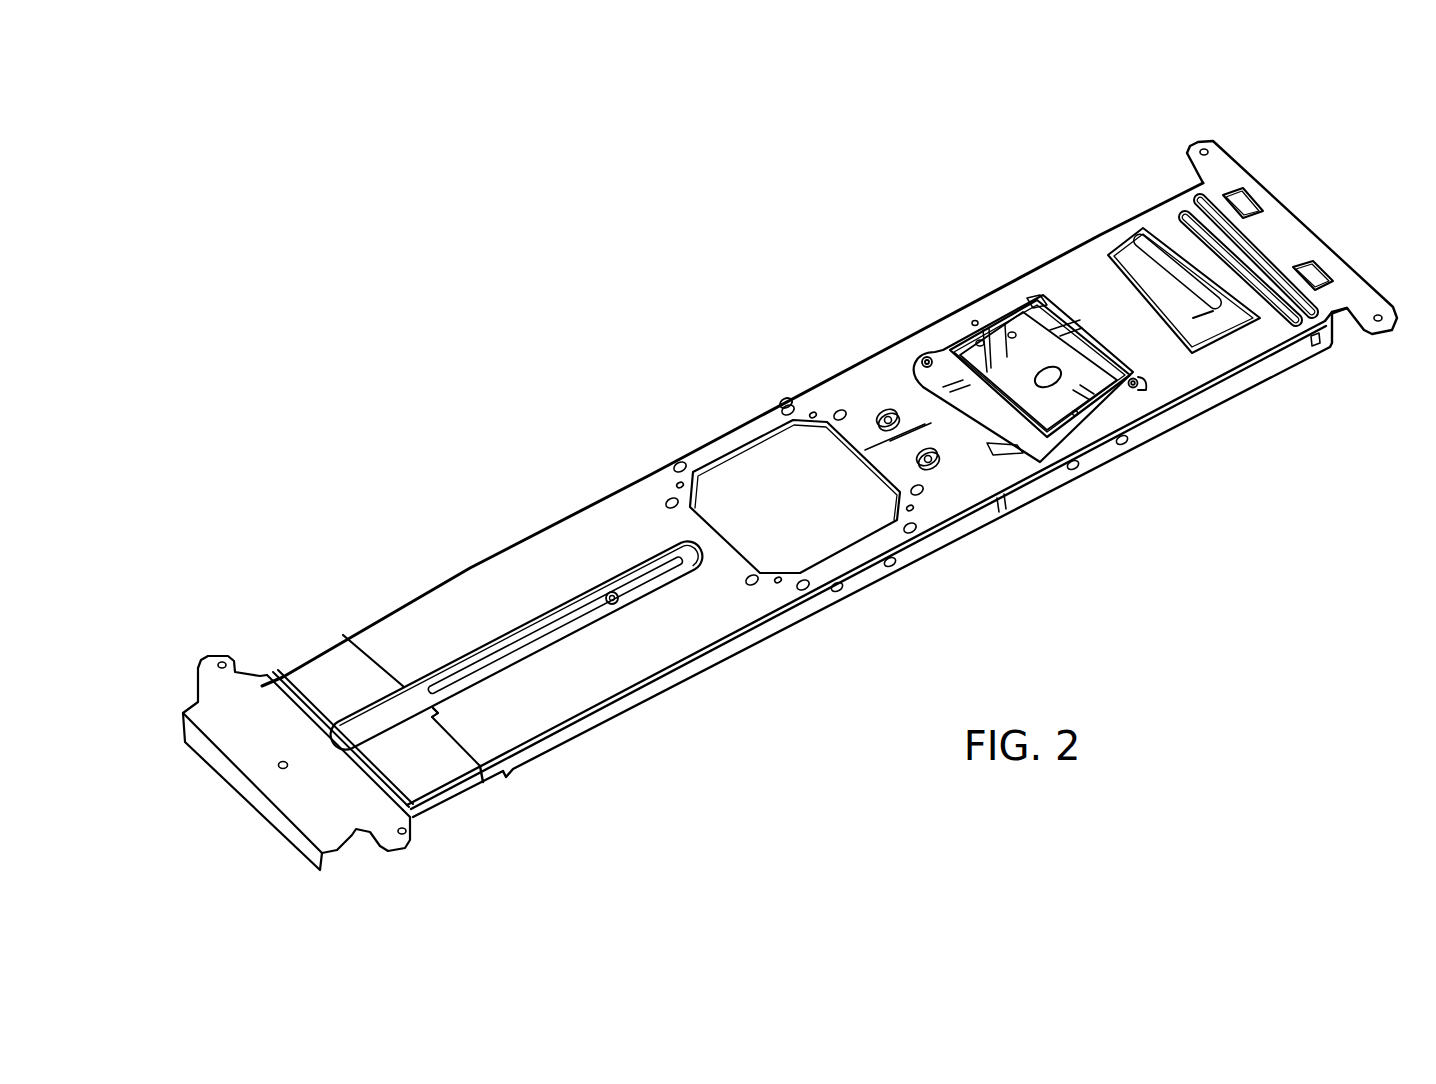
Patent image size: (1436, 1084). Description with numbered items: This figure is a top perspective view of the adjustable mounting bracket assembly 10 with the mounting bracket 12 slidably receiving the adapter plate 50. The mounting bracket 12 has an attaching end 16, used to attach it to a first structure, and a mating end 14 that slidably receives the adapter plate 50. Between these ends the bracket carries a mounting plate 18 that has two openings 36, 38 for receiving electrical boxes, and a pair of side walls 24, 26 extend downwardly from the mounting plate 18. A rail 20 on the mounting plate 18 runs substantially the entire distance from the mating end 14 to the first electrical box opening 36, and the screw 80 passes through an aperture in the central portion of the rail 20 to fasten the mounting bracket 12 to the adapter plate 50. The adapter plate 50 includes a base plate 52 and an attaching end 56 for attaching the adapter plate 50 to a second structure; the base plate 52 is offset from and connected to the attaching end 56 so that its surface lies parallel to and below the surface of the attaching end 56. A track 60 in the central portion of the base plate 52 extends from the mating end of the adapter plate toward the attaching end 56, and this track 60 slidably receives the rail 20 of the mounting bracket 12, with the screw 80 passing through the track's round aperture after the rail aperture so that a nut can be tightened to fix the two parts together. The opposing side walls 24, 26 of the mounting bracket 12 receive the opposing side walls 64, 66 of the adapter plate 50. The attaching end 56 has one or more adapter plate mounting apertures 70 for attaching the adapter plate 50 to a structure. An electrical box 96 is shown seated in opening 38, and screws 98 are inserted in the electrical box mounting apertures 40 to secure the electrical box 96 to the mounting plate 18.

The adjustable mounting bracket assembly 10 is at (1185, 503).
The mounting bracket 12 is at (1040, 510).
The mating end 14 is at (366, 662).
The attaching end 16 is at (1282, 235).
The mounting plate 18 is at (619, 530).
The rail 20 is at (540, 627).
The side wall 24 is at (663, 463).
The side wall 26 is at (563, 735).
The opening 36 is at (796, 507).
The opening 38 is at (1033, 415).
The electrical box mounting apertures 40 is at (786, 400).
The adapter plate 50 is at (447, 828).
The base plate 52 is at (327, 657).
The attaching end 56 is at (208, 713).
The track 60 is at (400, 717).
The side wall 64 is at (283, 677).
The side wall 66 is at (463, 787).
The adapter plate mounting apertures 70 is at (404, 836).
The screw 80 is at (616, 602).
The electrical box 96 is at (1003, 332).
The screws 98 is at (928, 358).